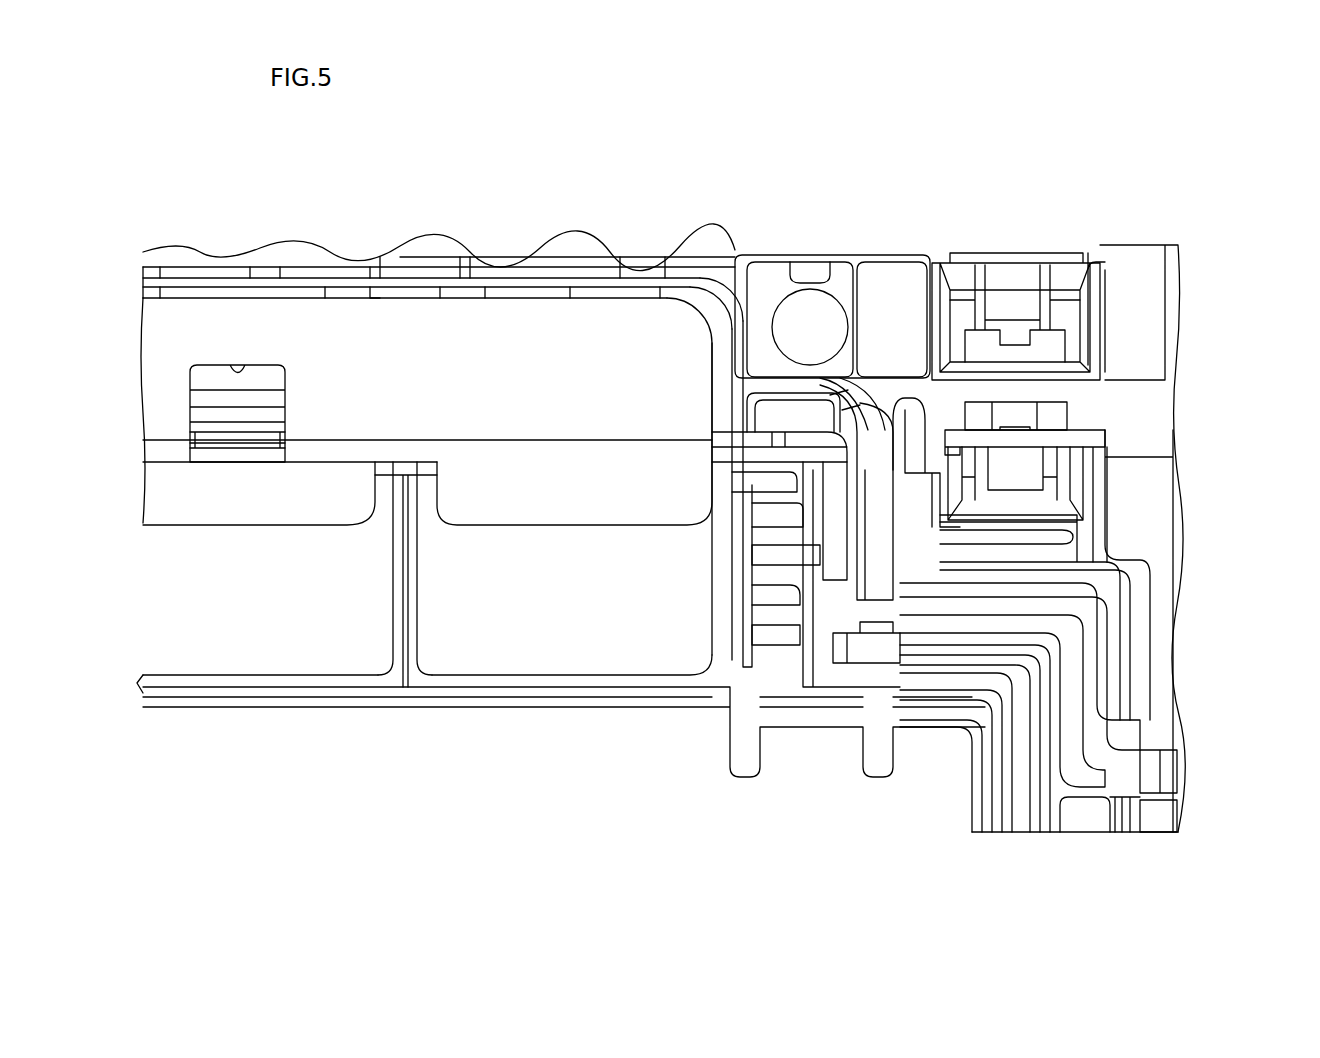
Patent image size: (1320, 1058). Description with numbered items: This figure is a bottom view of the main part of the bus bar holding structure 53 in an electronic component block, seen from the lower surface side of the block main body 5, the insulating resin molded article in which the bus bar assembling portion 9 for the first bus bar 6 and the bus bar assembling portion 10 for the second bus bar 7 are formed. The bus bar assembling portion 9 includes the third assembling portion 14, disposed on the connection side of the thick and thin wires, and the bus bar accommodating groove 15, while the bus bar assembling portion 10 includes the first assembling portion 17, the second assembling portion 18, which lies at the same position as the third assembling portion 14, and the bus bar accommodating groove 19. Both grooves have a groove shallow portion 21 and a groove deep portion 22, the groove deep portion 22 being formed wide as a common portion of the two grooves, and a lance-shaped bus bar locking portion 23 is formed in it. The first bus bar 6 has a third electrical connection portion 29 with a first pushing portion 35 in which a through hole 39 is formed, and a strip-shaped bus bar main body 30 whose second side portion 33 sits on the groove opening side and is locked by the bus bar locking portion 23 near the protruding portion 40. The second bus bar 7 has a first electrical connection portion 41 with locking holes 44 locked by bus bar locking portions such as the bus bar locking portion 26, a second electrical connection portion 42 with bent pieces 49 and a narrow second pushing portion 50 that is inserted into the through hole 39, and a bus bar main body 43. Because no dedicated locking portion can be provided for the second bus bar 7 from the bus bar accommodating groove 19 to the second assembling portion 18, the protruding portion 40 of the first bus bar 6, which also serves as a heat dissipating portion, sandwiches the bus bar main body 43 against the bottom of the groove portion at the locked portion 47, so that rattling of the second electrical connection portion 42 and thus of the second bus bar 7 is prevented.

The block main body 5 is at (1135, 243).
The first bus bar 6 is at (1024, 841).
The second bus bar 7 is at (1179, 740).
The bus bar assembling portion 9 is at (801, 688).
The bus bar assembling portion 10 is at (1059, 627).
The third assembling portion 14 is at (437, 574).
The bus bar accommodating groove 15 is at (1000, 698).
The first assembling portion 17 is at (1140, 688).
The second assembling portion 18 is at (430, 505).
The bus bar accommodating groove 19 is at (1145, 578).
The groove shallow portion 21 is at (935, 623).
The groove deep portion 22 is at (838, 395).
The bus bar locking portion 23 is at (805, 553).
The bus bar locking portion 26 is at (1020, 468).
The third electrical connection portion 29 is at (200, 318).
The bus bar main body 30 is at (1018, 773).
The second side portion 33 is at (805, 633).
The first pushing portion 35 is at (522, 335).
The through hole 39 is at (237, 389).
The protruding portion 40 is at (872, 420).
The first electrical connection portion 41 is at (1150, 498).
The second electrical connection portion 42 is at (555, 440).
The bus bar main body 43 is at (920, 603).
The locking holes 44 is at (1017, 432).
The locked portion 47 is at (820, 528).
The bent pieces 49 is at (172, 508).
The second pushing portion 50 is at (230, 445).
The bus bar holding structure 53 is at (823, 411).